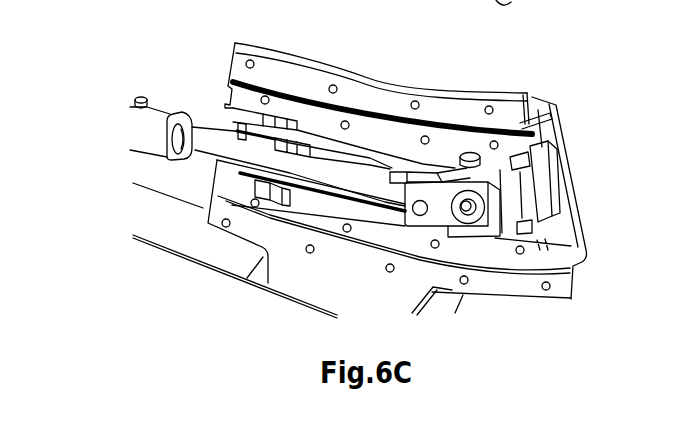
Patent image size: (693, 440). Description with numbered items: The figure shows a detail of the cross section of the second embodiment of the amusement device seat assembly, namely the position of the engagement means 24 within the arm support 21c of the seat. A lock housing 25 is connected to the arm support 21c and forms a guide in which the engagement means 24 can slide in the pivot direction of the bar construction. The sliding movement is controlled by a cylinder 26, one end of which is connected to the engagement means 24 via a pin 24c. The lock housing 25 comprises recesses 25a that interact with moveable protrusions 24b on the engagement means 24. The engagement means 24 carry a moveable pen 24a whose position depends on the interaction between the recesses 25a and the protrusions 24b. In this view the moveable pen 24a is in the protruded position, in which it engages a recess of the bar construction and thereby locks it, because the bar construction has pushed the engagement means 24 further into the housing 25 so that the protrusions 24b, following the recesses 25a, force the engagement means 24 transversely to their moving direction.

The arm support 21c is at (455, 110).
The engagement means 24 is at (456, 203).
The moveable pen 24a is at (473, 215).
The moveable protrusions 24b is at (483, 150).
The pin 24c is at (419, 205).
The lock housing 25 is at (552, 172).
The recesses 25a is at (515, 158).
The cylinder 26 is at (160, 130).